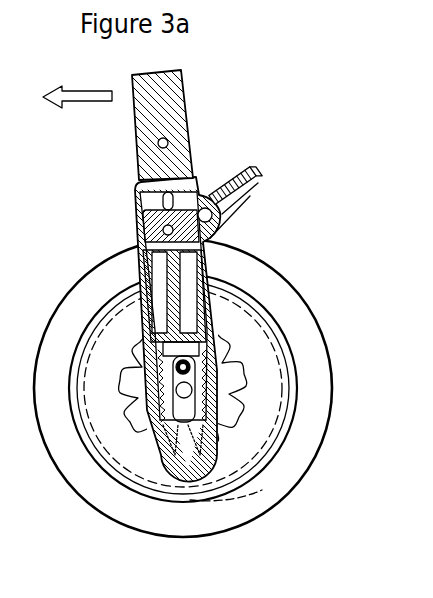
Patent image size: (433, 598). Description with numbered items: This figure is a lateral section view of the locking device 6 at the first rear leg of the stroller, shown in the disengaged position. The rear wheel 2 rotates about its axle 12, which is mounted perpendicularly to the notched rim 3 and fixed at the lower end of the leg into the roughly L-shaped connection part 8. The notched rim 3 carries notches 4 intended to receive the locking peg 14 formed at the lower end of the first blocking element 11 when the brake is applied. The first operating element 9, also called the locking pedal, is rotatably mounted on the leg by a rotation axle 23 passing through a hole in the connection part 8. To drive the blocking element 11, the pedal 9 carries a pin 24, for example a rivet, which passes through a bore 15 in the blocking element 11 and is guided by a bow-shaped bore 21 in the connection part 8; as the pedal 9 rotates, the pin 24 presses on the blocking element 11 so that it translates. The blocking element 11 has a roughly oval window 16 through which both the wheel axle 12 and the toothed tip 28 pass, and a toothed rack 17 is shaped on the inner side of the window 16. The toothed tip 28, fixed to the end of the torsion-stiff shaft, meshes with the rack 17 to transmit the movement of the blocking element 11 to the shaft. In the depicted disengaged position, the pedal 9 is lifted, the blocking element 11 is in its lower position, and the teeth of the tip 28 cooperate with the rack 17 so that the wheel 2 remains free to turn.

The wheel 2 is at (268, 266).
The notched rim 3 is at (264, 420).
The notch 4 is at (225, 492).
The locking device 6 is at (250, 120).
The connection part 8 is at (135, 182).
The first operating element 9 is at (246, 172).
The first blocking element 11 is at (245, 456).
The axle 12 is at (213, 390).
The locking peg 14 is at (187, 484).
The bore 15 is at (140, 227).
The window 16 is at (127, 377).
The toothed rack 17 is at (222, 326).
The bow-shaped bore 21 is at (150, 198).
The rotation axle 23 is at (222, 208).
The pin 24 is at (196, 186).
The toothed tip 28 is at (168, 330).